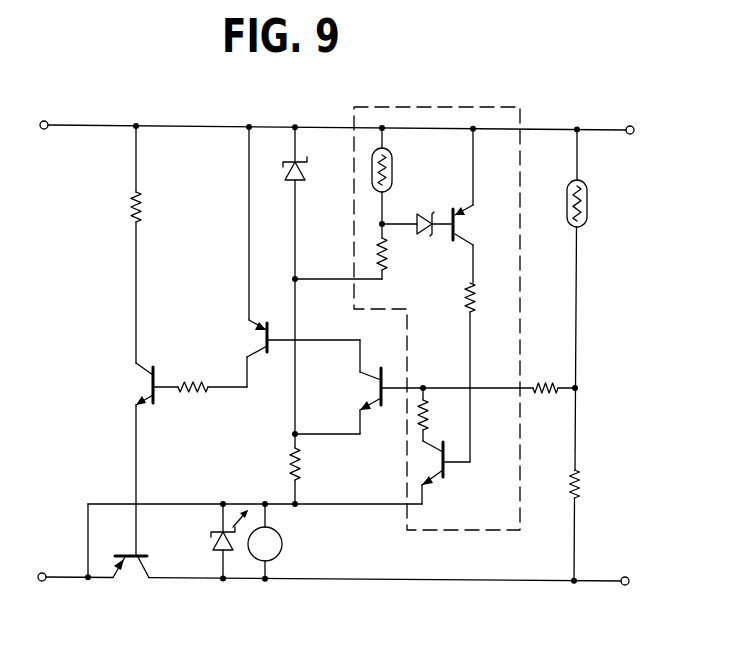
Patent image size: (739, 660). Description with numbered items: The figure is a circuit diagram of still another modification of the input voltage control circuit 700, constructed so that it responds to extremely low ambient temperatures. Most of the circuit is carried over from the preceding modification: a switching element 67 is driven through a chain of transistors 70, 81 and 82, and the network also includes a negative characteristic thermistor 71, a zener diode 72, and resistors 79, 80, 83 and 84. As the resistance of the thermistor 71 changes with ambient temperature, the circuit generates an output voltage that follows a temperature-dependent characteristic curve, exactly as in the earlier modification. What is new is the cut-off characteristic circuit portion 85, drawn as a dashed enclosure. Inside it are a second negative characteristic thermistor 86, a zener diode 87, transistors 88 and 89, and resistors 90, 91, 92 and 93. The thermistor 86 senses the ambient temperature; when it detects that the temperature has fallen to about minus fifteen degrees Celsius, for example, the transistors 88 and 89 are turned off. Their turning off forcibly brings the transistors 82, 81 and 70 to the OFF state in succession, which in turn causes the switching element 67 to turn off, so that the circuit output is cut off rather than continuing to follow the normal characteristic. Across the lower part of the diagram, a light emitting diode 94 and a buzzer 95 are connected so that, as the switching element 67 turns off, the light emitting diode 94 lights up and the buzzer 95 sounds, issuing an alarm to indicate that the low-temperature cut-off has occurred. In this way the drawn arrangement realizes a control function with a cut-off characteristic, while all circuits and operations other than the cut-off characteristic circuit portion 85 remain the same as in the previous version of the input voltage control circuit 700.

The switching element 67 is at (134, 568).
The transistor 70 is at (158, 372).
The negative characteristic thermistor 71 is at (589, 204).
The zener diode 72 is at (302, 184).
The resistor 79 is at (143, 211).
The resistor 80 is at (584, 493).
The transistor 81 is at (268, 358).
The transistor 82 is at (378, 388).
The resistor 83 is at (302, 467).
The resistor 84 is at (192, 396).
The cut-off characteristic circuit portion 85 is at (462, 106).
The negative characteristic thermistor 86 is at (398, 160).
The zener diode 87 is at (419, 213).
The transistor 88 is at (460, 225).
The transistor 89 is at (447, 474).
The resistor 90 is at (390, 258).
The resistor 91 is at (463, 295).
The resistor 92 is at (436, 409).
The resistor 93 is at (546, 400).
The light emitting diode 94 is at (214, 543).
The buzzer 95 is at (285, 548).
The input voltage control circuit 700 is at (497, 616).